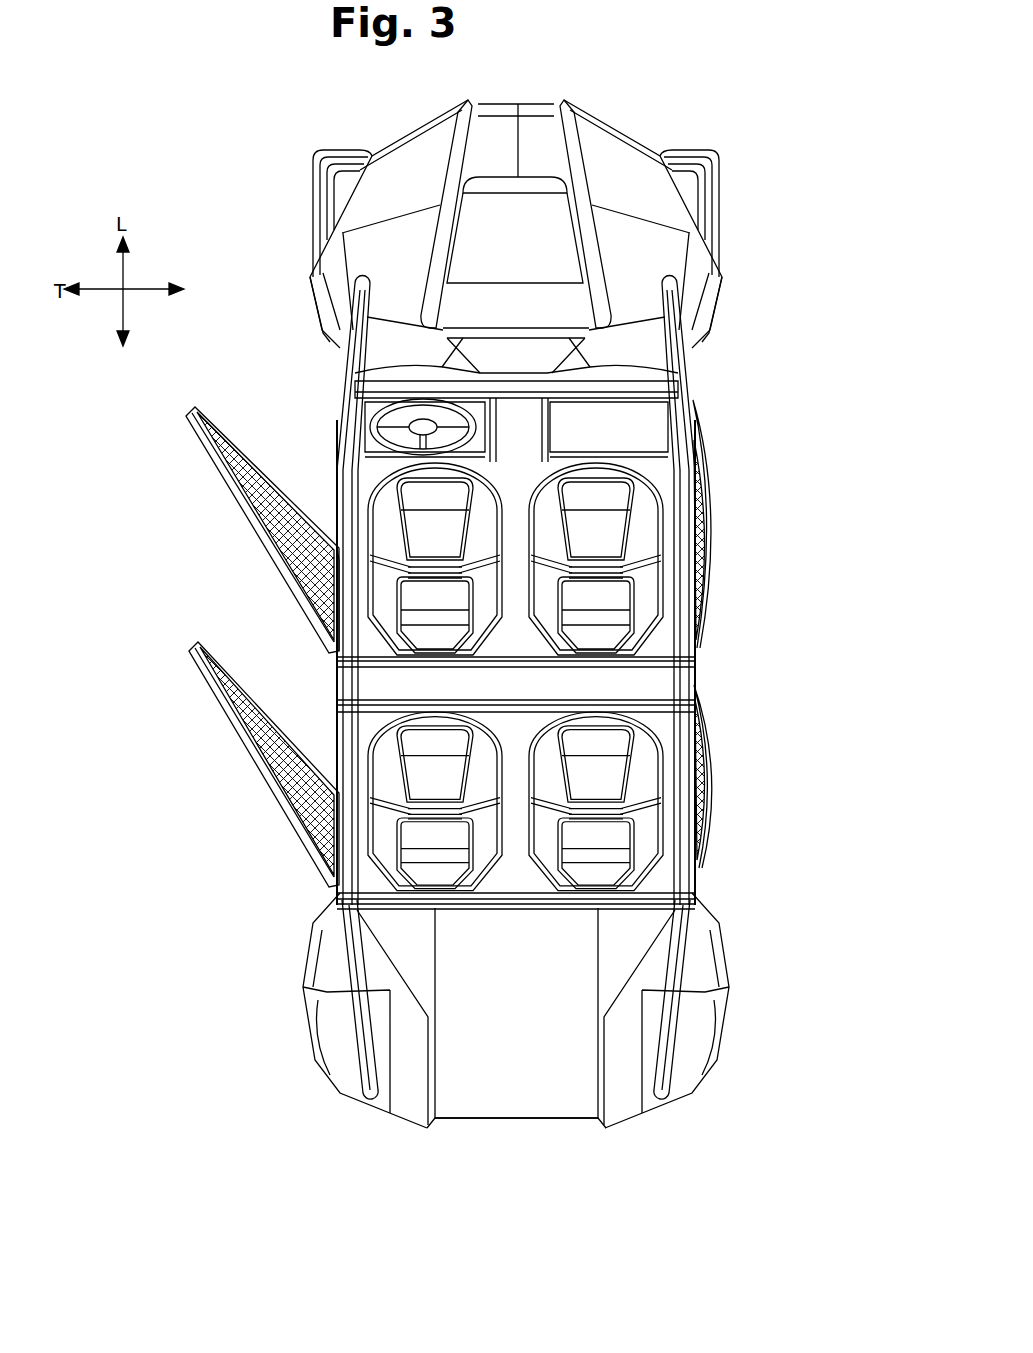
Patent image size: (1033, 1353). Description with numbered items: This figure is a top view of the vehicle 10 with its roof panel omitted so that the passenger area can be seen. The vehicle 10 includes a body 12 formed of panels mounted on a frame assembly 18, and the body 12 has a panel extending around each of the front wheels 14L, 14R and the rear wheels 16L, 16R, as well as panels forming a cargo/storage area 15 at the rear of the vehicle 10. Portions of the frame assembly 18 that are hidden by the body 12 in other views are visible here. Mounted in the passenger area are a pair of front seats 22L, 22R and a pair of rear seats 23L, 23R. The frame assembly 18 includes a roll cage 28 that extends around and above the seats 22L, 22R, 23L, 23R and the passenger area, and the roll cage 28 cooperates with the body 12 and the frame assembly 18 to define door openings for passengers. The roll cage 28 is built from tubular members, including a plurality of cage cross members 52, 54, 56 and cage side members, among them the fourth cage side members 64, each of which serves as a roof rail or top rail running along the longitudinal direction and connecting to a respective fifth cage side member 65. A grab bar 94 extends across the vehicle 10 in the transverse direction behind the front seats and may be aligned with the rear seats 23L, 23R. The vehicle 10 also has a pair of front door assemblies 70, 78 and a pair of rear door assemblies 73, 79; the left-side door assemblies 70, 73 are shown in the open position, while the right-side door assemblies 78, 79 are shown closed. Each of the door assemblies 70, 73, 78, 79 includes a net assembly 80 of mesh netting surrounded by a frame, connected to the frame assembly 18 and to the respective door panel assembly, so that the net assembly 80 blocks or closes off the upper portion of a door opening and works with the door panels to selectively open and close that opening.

The vehicle 10 is at (377, 1130).
The body 12 is at (613, 140).
The front wheel 14L is at (310, 183).
The front wheel 14R is at (717, 176).
The cargo/storage area 15 is at (565, 1093).
The rear wheel 16L is at (315, 1055).
The rear wheel 16R is at (720, 1055).
The frame assembly 18 is at (350, 398).
The front seat 22L is at (390, 507).
The front seat 22R is at (655, 495).
The rear seat 23L is at (420, 740).
The rear seat 23R is at (625, 735).
The roll cage 28 is at (696, 396).
The cage cross member 52 is at (390, 385).
The cage cross member 54 is at (705, 688).
The cage cross member 56 is at (680, 918).
The fourth cage side member 64 is at (343, 560).
The fifth cage side member 65 is at (345, 950).
The front door assembly 70 is at (258, 548).
The rear door assembly 73 is at (278, 815).
The front door assembly 78 is at (715, 605).
The rear door assembly 79 is at (720, 822).
The net assembly 80 is at (222, 497).
The grab bar 94 is at (395, 700).